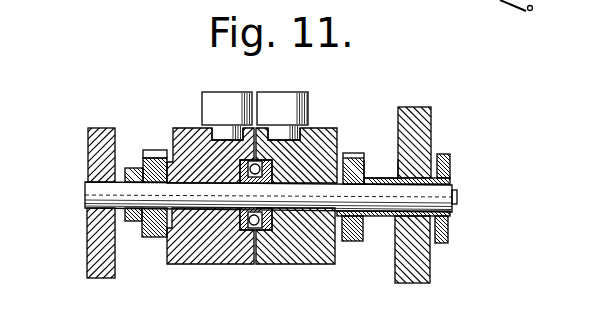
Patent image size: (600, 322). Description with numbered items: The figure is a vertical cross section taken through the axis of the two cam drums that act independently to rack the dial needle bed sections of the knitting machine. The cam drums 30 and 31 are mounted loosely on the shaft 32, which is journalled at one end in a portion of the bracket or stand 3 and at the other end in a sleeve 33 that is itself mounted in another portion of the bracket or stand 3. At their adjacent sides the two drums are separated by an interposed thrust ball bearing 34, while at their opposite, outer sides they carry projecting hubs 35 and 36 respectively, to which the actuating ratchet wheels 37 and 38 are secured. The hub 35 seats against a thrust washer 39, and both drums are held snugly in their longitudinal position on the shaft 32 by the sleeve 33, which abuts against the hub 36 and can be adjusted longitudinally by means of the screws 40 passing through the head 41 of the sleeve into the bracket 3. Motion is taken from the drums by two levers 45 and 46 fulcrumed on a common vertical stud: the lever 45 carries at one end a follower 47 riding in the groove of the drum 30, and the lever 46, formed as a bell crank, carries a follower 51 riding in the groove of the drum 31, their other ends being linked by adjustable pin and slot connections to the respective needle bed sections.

The bracket or stand 3 is at (90, 140).
The cam drum 30 is at (177, 130).
The cam drum 31 is at (320, 138).
The shaft 32 is at (440, 193).
The sleeve 33 is at (382, 178).
The thrust ball bearing 34 is at (252, 225).
The hub 35 is at (143, 175).
The hub 36 is at (350, 178).
The actuating ratchet wheel 37 is at (157, 156).
The actuating ratchet wheel 38 is at (366, 166).
The thrust washer 39 is at (130, 212).
The screws 40 is at (457, 204).
The head 41 is at (445, 157).
The lever 45 is at (237, 100).
The lever 46 is at (284, 100).
The follower 47 is at (218, 130).
The follower 51 is at (290, 132).